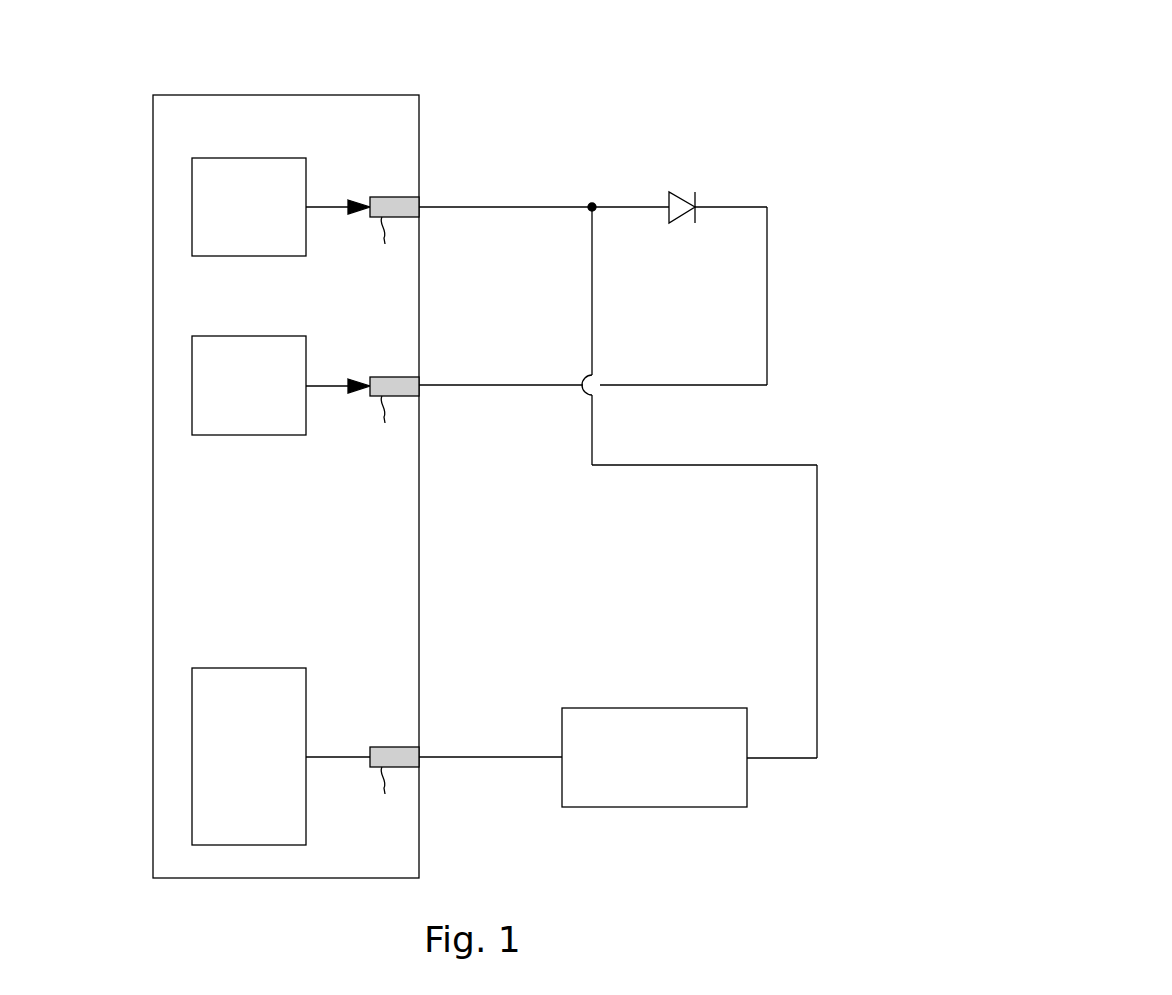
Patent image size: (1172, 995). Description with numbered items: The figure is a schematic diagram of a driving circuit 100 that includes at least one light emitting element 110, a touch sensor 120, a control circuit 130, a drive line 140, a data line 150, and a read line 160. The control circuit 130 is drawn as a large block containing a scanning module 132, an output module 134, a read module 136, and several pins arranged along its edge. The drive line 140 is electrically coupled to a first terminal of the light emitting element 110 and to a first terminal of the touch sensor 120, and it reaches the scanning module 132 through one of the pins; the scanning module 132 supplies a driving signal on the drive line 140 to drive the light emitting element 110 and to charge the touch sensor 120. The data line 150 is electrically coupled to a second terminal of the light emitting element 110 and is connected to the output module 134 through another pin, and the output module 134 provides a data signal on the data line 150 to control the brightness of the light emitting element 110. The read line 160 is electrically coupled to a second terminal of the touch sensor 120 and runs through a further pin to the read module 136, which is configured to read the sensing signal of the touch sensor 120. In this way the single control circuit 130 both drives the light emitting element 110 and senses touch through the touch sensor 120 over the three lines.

The driving circuit 100 is at (1152, 67).
The light emitting element 110 is at (688, 181).
The touch sensor 120 is at (675, 772).
The control circuit 130 is at (199, 126).
The scanning module 132 is at (268, 219).
The output module 134 is at (268, 399).
The read module 136 is at (268, 769).
The drive line 140 is at (483, 208).
The data line 150 is at (483, 386).
The read line 160 is at (483, 758).